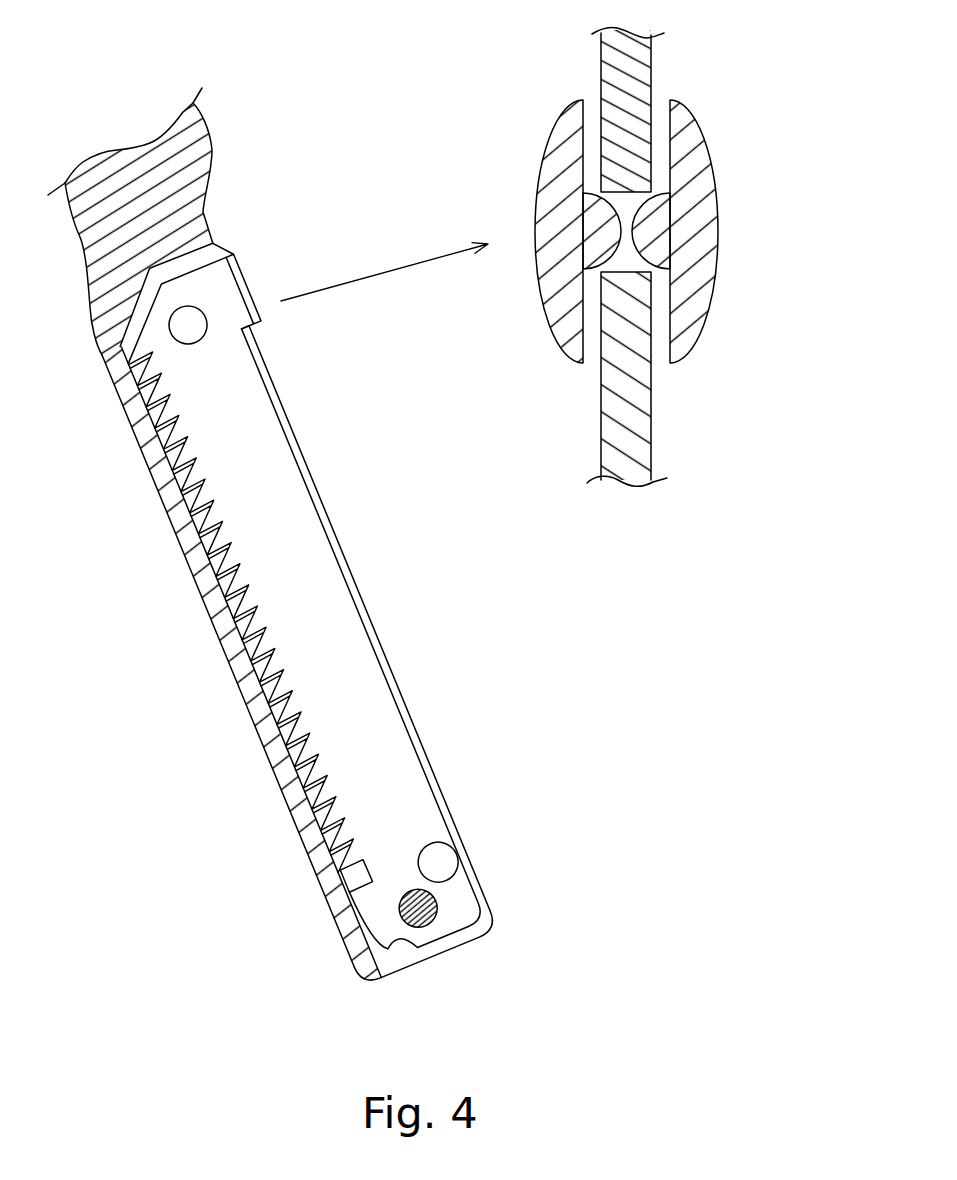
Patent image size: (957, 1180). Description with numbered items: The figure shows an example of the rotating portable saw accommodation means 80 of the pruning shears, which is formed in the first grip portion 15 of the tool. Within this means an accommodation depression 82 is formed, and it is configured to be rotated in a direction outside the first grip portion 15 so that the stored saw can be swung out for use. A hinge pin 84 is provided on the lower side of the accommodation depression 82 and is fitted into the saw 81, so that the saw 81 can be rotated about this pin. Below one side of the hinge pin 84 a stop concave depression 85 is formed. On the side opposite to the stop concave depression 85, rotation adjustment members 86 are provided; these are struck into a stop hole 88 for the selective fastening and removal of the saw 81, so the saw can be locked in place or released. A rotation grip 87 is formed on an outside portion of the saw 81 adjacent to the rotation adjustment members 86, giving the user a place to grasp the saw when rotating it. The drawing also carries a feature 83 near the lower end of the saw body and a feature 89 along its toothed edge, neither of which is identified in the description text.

The first grip portion 15 is at (192, 192).
The rotating portable saw accommodation means 80 is at (340, 542).
The saw 81 is at (343, 653).
The accommodation depression 82 is at (300, 455).
The hole 83 is at (440, 861).
The hinge pin 84 is at (427, 910).
The stop concave depression 85 is at (402, 947).
The rotation adjustment members 86 is at (190, 326).
The rotation grip 87 is at (242, 285).
The stop hole 88 is at (607, 193).
The rack teeth 89 is at (215, 539).